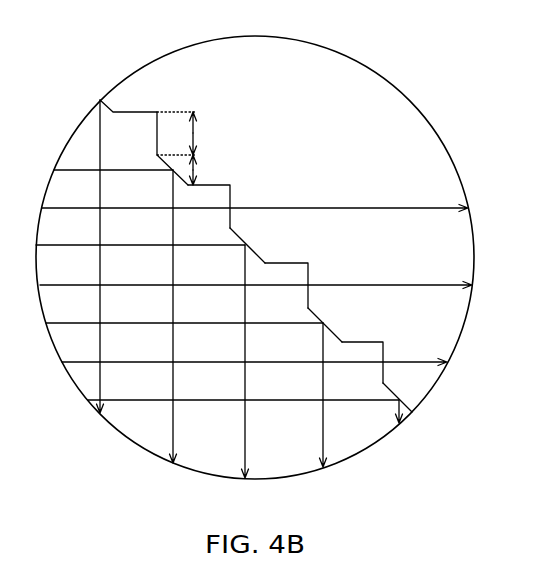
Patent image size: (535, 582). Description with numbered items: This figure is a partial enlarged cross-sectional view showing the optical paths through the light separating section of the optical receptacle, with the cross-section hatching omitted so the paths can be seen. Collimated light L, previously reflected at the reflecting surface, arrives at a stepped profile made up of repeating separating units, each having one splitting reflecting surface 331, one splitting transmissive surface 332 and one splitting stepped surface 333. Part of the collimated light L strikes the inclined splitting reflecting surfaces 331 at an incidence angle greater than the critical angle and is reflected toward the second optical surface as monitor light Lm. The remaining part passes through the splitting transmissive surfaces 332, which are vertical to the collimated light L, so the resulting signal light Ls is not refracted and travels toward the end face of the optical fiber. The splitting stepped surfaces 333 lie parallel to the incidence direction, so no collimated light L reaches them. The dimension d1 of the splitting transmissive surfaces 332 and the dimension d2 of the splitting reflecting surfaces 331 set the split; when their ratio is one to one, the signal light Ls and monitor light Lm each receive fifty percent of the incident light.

The splitting stepped surface 333 is at (222, 185).
The splitting transmissive surface 332 is at (310, 272).
The splitting reflecting surface 331 is at (337, 333).
The dimension of splitting transmissive surface d1 is at (193, 133).
The dimension of splitting reflecting surface d2 is at (193, 168).
The signal light Ls is at (423, 208).
The monitor light Lm is at (325, 425).
The collimated light L is at (63, 325).